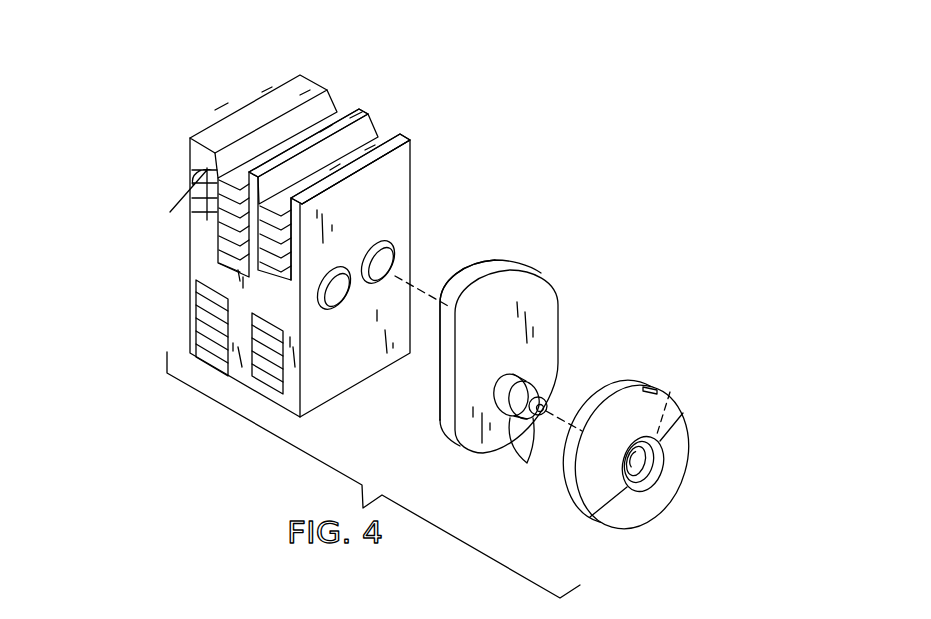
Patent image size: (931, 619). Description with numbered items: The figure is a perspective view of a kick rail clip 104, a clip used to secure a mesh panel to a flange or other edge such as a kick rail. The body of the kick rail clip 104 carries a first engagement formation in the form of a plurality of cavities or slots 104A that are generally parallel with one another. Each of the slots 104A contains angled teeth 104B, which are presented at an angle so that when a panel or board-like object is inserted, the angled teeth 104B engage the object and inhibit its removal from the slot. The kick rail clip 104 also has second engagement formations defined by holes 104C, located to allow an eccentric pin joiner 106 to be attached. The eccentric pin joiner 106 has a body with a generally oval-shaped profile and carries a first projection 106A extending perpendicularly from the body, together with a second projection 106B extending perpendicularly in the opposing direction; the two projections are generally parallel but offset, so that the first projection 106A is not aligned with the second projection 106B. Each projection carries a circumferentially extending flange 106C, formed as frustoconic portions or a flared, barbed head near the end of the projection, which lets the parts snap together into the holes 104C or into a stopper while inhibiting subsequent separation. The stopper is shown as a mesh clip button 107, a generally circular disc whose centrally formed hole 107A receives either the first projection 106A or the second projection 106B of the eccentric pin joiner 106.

The kick rail clip 104 is at (225, 122).
The slots 104A is at (391, 122).
The angled teeth 104B is at (195, 186).
The holes 104C is at (371, 284).
The eccentric pin joiner 106 is at (528, 268).
The first projection 106A is at (454, 292).
The second projection 106B is at (549, 357).
The circumferentially extending flange 106C is at (524, 462).
The mesh clip button 107 is at (670, 387).
The centrally formed hole 107A is at (651, 470).